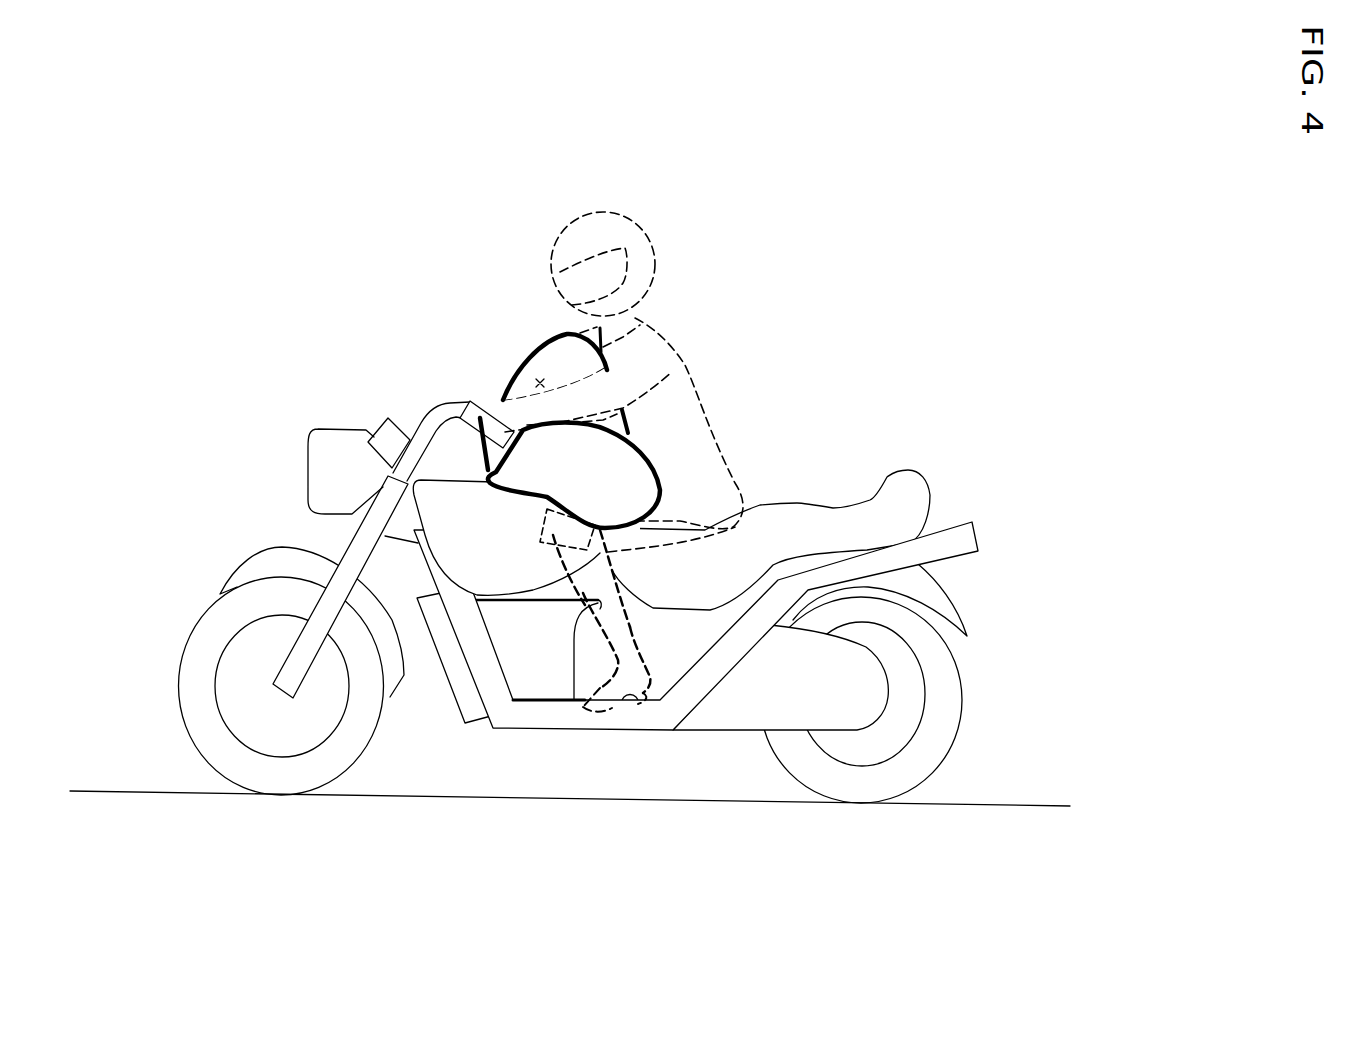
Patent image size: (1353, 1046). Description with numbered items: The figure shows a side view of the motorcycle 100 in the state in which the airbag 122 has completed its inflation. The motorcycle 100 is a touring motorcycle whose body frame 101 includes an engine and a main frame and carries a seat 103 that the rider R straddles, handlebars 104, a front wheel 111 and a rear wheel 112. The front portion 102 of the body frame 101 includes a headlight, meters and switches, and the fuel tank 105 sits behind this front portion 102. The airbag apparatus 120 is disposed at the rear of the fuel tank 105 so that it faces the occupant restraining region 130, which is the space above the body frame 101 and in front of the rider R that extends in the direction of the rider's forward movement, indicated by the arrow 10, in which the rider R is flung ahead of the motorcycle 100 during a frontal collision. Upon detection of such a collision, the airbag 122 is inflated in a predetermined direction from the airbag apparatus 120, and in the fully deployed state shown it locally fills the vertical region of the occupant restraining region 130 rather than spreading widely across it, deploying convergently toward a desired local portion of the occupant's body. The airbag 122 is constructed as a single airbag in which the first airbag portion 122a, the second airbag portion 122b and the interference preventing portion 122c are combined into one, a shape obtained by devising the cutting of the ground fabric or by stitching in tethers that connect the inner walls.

The arrow 10 is at (643, 168).
The motorcycle 100 is at (875, 383).
The body frame 101 is at (547, 732).
The front portion 102 is at (375, 428).
The seat 103 is at (820, 518).
The handlebars 104 is at (467, 402).
The fuel tank 105 is at (447, 472).
The front wheel 111 is at (275, 780).
The rear wheel 112 is at (848, 787).
The airbag apparatus 120 is at (553, 536).
The airbag 122 is at (641, 402).
The first airbag portion 122a is at (633, 480).
The second airbag portion 122b is at (580, 353).
The interference preventing portion 122c is at (627, 410).
The occupant restraining region 130 is at (540, 380).
The rider R is at (670, 357).